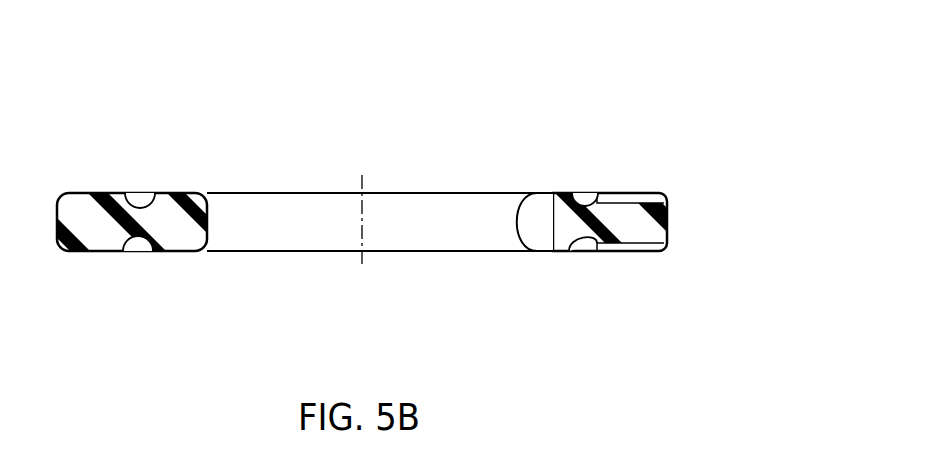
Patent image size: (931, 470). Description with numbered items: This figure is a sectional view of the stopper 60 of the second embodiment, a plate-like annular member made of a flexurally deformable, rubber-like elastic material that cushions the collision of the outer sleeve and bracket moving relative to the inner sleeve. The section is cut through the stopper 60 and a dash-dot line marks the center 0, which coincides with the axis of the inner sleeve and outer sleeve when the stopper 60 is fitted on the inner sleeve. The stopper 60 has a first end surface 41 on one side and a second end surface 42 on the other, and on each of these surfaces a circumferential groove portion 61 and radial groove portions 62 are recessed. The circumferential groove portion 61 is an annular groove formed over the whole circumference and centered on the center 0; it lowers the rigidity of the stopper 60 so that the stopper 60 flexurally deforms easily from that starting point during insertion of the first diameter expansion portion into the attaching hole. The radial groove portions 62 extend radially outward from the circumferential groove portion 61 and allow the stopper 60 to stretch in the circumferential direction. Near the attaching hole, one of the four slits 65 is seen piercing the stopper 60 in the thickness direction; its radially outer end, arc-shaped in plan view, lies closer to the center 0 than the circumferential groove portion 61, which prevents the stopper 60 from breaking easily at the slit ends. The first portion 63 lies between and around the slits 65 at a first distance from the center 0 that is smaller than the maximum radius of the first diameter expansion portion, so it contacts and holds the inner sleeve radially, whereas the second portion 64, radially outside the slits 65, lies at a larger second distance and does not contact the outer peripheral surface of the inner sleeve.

The center / axis 0 is at (362, 176).
The first end surface 41 is at (175, 193).
The second end surface 42 is at (175, 251).
The stopper 60 is at (689, 75).
The circumferential groove portion 61 is at (139, 193).
The radial groove portion 62 is at (627, 200).
The first portion 63 is at (186, 224).
The second portion 64 is at (653, 233).
The slit 65 is at (538, 230).